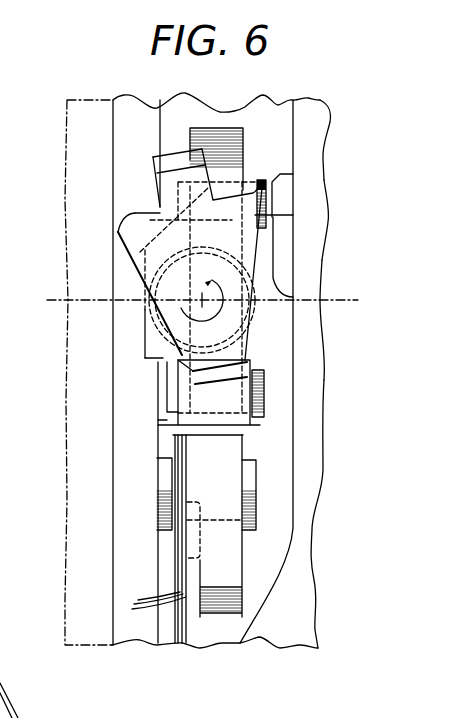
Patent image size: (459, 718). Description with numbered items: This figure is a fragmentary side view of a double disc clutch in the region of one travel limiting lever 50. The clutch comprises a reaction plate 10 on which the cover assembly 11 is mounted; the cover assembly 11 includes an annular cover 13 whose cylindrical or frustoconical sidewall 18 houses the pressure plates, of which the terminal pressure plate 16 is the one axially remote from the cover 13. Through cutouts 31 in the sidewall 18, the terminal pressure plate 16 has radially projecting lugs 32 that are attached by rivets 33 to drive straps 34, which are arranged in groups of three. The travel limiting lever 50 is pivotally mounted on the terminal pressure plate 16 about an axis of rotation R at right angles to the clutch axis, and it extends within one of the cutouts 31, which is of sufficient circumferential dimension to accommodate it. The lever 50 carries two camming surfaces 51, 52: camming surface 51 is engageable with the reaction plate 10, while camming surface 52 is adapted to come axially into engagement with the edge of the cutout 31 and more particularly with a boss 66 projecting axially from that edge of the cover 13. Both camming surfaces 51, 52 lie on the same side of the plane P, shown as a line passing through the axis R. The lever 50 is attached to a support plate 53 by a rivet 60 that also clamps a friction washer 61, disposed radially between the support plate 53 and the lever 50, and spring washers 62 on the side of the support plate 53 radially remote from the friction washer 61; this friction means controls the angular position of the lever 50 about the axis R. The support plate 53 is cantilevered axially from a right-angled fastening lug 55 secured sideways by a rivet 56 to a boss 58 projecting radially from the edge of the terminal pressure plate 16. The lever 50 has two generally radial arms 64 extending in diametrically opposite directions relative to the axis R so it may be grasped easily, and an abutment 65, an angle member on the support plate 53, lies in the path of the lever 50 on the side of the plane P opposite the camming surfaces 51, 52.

The reaction plate 10 is at (60, 145).
The cover assembly 11 is at (338, 108).
The annular cover 13 is at (333, 215).
The terminal pressure plate 16 is at (285, 96).
The sidewall 18 is at (310, 335).
The cutouts 31 is at (289, 391).
The lugs 32 is at (230, 488).
The rivets 33 is at (255, 512).
The drive straps 34 is at (153, 539).
The travel limiting lever 50 is at (135, 205).
The camming surface 51 is at (115, 230).
The camming surface 52 is at (272, 212).
The support plate 53 is at (155, 424).
The fastening lug 55 is at (250, 358).
The rivet 56 is at (263, 181).
The boss 58 is at (243, 170).
The rivet 60 is at (175, 310).
The friction washer 61 is at (140, 280).
The spring washers 62 is at (150, 333).
The arm 64 is at (154, 158).
The abutment 65 is at (170, 393).
The boss 66 is at (272, 259).
The axis of rotation R is at (202, 289).
The plane P is at (342, 300).